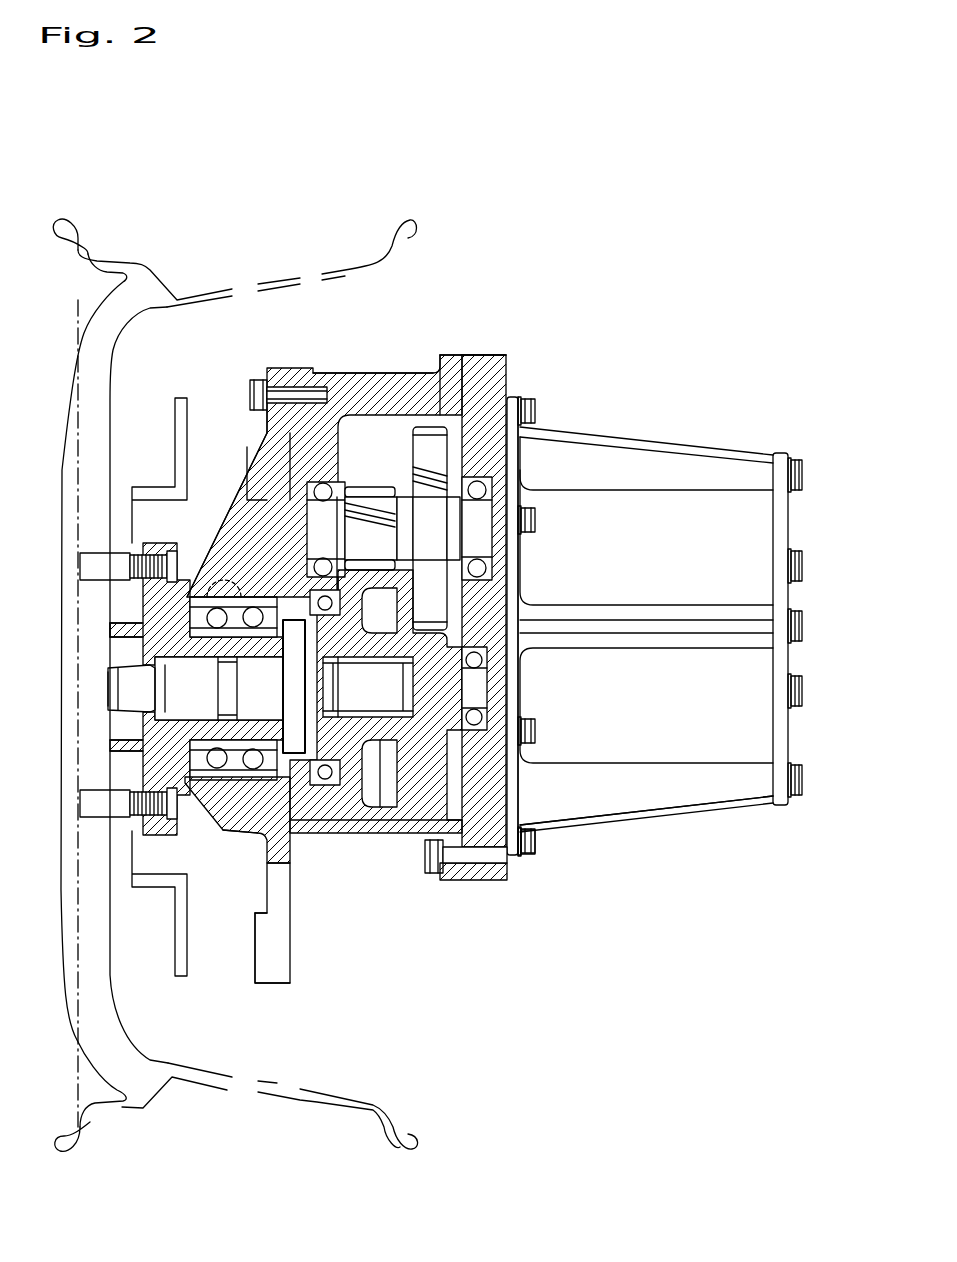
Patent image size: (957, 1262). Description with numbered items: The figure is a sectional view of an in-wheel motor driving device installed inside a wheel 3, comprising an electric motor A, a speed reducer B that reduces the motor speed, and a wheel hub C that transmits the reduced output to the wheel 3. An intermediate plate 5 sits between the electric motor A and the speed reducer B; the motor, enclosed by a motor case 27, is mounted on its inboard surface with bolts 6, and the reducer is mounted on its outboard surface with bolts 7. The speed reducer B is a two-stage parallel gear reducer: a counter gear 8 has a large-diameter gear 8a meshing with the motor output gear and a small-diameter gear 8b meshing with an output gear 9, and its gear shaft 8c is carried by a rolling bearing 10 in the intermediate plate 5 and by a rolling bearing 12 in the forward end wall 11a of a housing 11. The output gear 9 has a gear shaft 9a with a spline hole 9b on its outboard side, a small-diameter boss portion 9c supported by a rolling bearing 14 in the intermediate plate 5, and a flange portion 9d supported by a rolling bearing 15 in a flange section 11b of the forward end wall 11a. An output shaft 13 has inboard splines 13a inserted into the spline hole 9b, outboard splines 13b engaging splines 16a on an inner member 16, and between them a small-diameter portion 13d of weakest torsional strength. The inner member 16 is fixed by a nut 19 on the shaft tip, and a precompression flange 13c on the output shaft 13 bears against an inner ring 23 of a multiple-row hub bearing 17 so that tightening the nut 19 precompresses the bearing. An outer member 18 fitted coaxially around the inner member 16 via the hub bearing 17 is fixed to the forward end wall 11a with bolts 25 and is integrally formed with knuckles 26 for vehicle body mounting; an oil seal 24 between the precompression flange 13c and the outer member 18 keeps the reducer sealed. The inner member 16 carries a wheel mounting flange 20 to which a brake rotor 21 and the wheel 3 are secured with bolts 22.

The wheel 3 is at (316, 277).
The intermediate plate 5 is at (462, 356).
The bolt 6 is at (528, 850).
The bolt 7 is at (480, 872).
The counter gear 8 is at (510, 400).
The large-diameter gear 8a is at (498, 358).
The small-diameter gear 8b is at (450, 413).
The gear shaft 8c is at (482, 522).
The output gear 9 is at (412, 770).
The gear shaft 9a is at (455, 870).
The spline hole 9b is at (400, 740).
The small-diameter boss portion 9c is at (535, 735).
The flange portion 9d is at (237, 483).
The rolling bearing 10 is at (455, 466).
The housing 11 is at (450, 355).
The forward end wall 11a is at (302, 452).
The flange section 11b is at (276, 462).
The rolling bearing 12 is at (362, 490).
The output shaft 13 is at (142, 748).
The splines 13a is at (332, 792).
The splines 13b is at (190, 735).
The precompression flange 13c is at (286, 835).
The small-diameter portion 13d is at (295, 790).
The rolling bearing 14 is at (545, 812).
The rolling bearing 15 is at (250, 480).
The inner member 16 is at (128, 635).
The splines 16a is at (165, 675).
The multiple-row hub bearing 17 is at (235, 795).
The outer member 18 is at (236, 785).
The nut 19 is at (190, 708).
The wheel mounting flange 20 is at (150, 845).
The brake rotor 21 is at (183, 456).
The bolt 22 is at (97, 560).
The inner ring 23 is at (112, 690).
The oil seal 24 is at (237, 572).
The bolt 25 is at (258, 380).
The knuckle 26 is at (282, 968).
The motor case 27 is at (672, 552).
The electric motor A is at (650, 412).
The speed reducer B is at (430, 312).
The wheel hub C is at (88, 622).